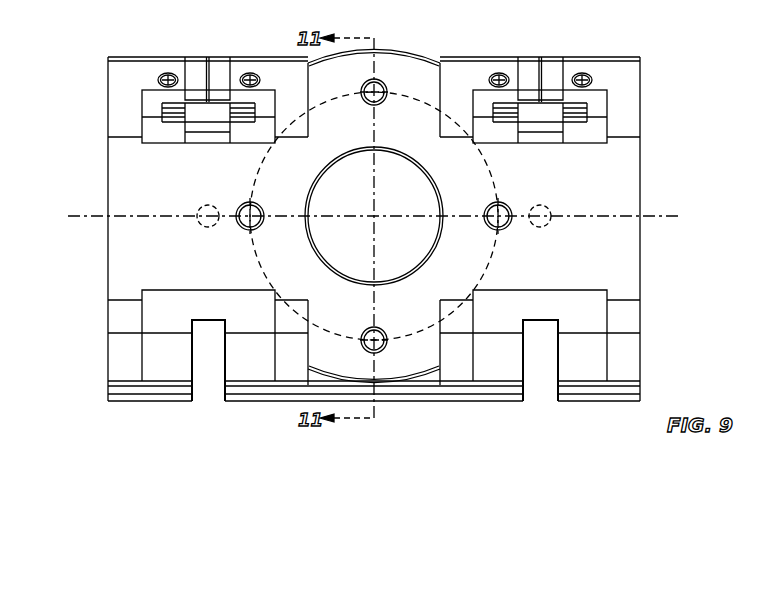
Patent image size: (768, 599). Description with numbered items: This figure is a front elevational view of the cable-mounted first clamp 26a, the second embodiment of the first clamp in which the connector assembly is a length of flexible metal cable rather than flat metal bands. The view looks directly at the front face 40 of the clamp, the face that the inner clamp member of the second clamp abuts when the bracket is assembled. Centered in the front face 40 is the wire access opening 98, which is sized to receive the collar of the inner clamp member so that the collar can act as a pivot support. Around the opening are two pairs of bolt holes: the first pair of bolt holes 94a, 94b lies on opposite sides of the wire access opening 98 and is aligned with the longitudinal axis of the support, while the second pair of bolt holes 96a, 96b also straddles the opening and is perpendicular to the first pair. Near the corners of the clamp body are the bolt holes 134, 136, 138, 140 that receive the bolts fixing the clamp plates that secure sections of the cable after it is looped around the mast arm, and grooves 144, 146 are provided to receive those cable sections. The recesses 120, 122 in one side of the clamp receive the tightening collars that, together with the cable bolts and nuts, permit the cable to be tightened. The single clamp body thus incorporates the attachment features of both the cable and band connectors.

The first clamp 26a is at (607, 186).
The front face 40 is at (607, 267).
The bolt hole 94a is at (503, 204).
The bolt hole 94b is at (246, 204).
The bolt hole 96a is at (380, 328).
The bolt hole 96b is at (382, 80).
The wire access opening 98 is at (335, 235).
The recess 120 is at (500, 373).
The recess 122 is at (167, 373).
The bolt hole 134 is at (583, 76).
The bolt hole 136 is at (500, 76).
The bolt hole 138 is at (251, 76).
The bolt hole 140 is at (170, 76).
The groove 144 is at (547, 90).
The groove 146 is at (203, 90).